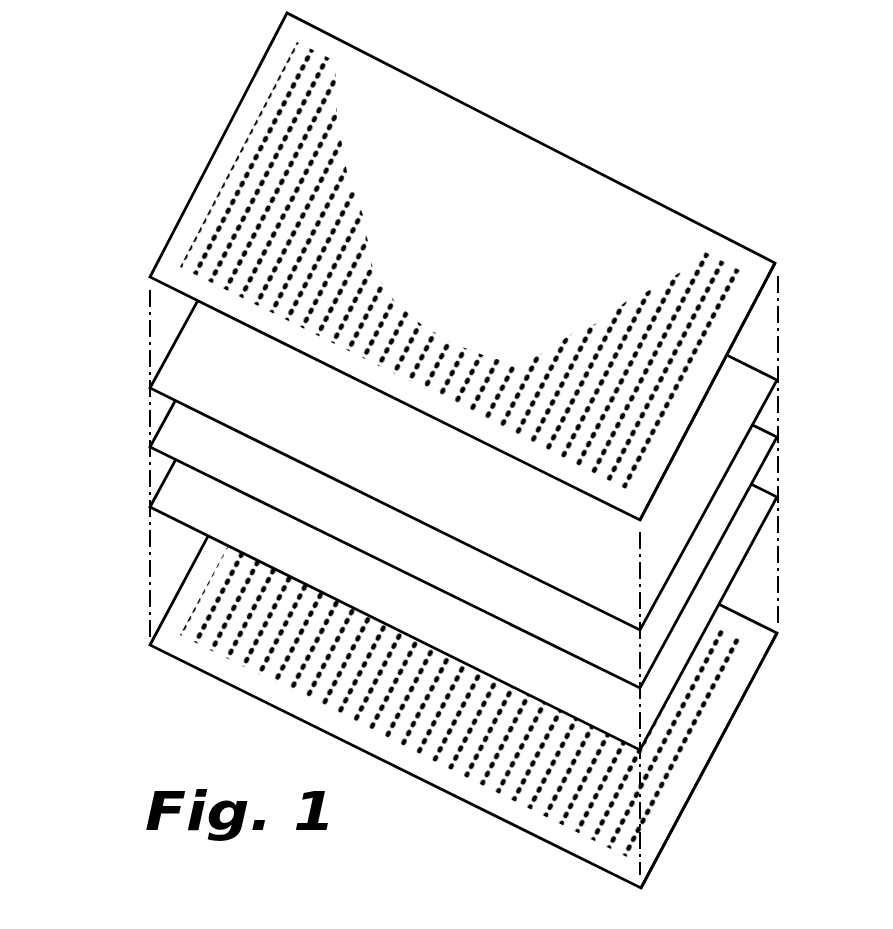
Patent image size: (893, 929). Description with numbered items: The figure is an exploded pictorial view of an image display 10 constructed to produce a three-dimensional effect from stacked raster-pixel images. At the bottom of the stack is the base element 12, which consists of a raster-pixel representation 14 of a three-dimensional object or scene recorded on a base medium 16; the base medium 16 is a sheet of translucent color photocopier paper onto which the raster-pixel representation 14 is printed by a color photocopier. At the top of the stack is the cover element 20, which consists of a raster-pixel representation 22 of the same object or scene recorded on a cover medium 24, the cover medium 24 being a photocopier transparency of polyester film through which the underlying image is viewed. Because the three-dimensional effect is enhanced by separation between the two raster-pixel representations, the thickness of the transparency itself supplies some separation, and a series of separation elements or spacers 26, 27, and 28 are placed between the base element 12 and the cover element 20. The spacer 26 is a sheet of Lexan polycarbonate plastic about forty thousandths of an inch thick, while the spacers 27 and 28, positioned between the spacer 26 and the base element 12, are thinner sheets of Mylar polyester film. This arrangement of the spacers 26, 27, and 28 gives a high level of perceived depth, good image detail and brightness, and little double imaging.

The image display 10 is at (74, 157).
The base element 12 is at (728, 753).
The raster-pixel representation 14 is at (590, 825).
The base medium 16 is at (677, 802).
The cover element 20 is at (572, 148).
The raster-pixel representation 22 is at (663, 313).
The cover medium 24 is at (740, 317).
The spacer 26 is at (750, 393).
The spacer 27 is at (757, 452).
The spacer 28 is at (760, 525).